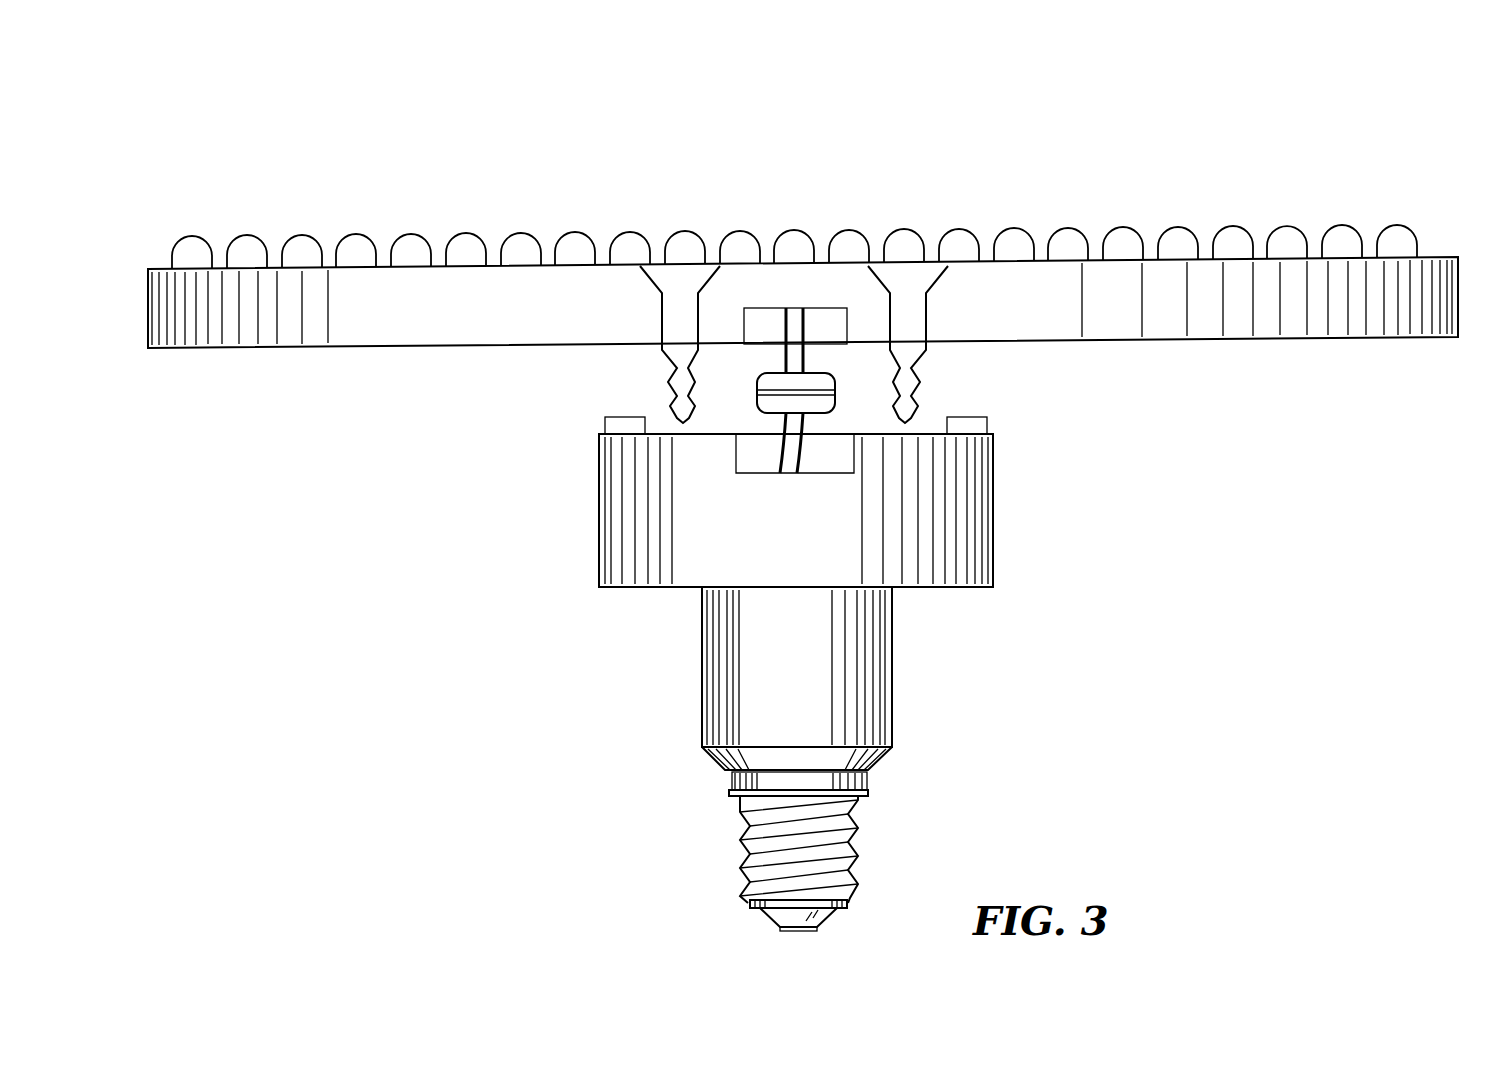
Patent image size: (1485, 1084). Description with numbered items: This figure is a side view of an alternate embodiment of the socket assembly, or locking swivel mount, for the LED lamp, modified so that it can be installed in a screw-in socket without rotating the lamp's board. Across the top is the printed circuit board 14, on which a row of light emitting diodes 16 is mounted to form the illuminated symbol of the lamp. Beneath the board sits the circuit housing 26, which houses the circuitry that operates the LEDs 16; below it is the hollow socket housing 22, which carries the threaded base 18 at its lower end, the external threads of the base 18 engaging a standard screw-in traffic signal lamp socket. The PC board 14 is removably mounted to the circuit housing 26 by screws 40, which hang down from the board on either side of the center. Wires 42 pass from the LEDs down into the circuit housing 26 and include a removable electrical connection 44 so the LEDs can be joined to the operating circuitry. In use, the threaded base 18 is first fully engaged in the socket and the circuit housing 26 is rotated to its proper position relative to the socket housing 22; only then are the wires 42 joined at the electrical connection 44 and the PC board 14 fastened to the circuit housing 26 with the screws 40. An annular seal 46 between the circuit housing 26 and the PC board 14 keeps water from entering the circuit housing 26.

The printed circuit board 14 is at (163, 314).
The light emitting diodes 16 is at (1095, 223).
The threaded base 18 is at (858, 856).
The hollow socket housing 22 is at (880, 690).
The circuit housing 26 is at (607, 548).
The screws 40 is at (935, 367).
The wires 42 is at (810, 357).
The removable electrical connection 44 is at (737, 389).
The annular seal 46 is at (1003, 419).